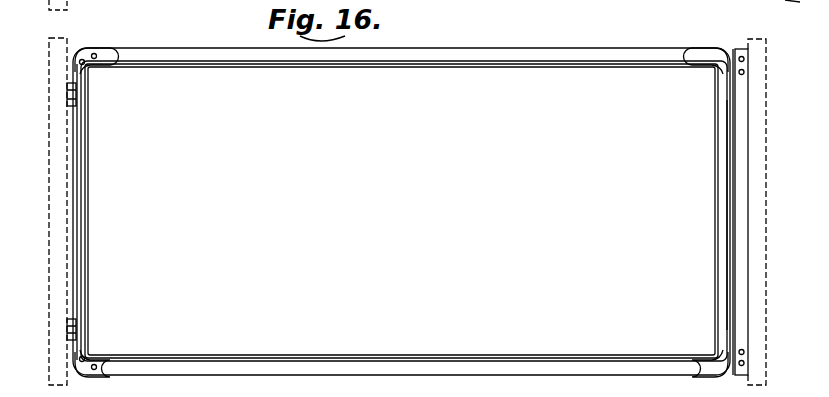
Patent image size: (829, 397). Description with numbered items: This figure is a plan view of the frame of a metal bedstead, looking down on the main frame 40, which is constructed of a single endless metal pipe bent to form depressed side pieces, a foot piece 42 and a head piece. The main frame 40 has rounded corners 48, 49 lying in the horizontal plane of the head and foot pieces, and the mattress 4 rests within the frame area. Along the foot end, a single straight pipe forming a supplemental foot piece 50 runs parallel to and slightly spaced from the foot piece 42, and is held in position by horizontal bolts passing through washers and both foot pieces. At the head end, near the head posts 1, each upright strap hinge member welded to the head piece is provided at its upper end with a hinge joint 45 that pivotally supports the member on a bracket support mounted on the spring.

The head posts 1 is at (58, 182).
The mattress 4 is at (417, 120).
The main frame 40 is at (557, 46).
The foot piece 42 is at (722, 192).
The hinge joint 45 is at (70, 106).
The rounded corners 48 is at (81, 50).
The rounded corners 49 is at (718, 50).
The supplemental foot piece 50 is at (742, 214).